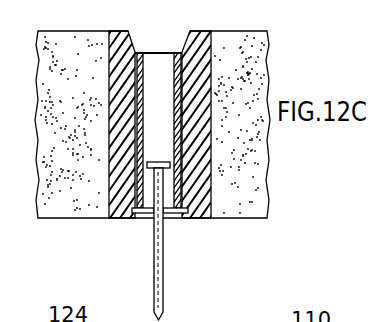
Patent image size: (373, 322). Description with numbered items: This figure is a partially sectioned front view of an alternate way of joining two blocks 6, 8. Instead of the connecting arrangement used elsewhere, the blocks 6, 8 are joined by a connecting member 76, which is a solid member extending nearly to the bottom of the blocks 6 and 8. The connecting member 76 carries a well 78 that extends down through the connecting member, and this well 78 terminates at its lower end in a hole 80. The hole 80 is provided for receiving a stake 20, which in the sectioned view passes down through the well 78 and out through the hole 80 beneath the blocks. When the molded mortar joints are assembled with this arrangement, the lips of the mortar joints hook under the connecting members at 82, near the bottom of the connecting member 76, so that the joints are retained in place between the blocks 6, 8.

The block 6 is at (63, 118).
The block 8 is at (228, 116).
The stake 20 is at (164, 248).
The connecting member 76 is at (139, 52).
The well 78 is at (154, 52).
The hole 80 is at (169, 215).
The mortar joint lip hook location 82 is at (141, 214).